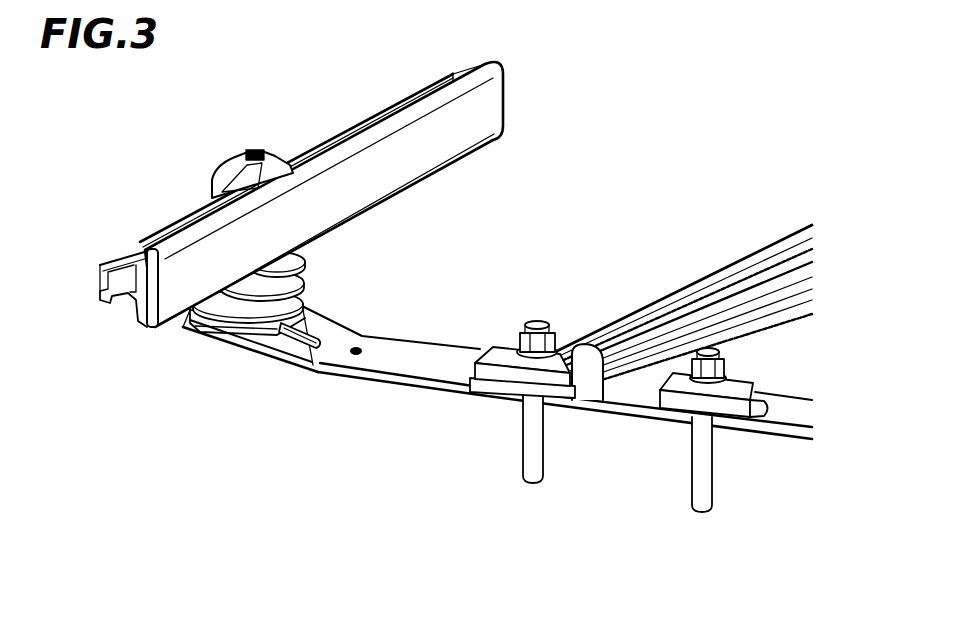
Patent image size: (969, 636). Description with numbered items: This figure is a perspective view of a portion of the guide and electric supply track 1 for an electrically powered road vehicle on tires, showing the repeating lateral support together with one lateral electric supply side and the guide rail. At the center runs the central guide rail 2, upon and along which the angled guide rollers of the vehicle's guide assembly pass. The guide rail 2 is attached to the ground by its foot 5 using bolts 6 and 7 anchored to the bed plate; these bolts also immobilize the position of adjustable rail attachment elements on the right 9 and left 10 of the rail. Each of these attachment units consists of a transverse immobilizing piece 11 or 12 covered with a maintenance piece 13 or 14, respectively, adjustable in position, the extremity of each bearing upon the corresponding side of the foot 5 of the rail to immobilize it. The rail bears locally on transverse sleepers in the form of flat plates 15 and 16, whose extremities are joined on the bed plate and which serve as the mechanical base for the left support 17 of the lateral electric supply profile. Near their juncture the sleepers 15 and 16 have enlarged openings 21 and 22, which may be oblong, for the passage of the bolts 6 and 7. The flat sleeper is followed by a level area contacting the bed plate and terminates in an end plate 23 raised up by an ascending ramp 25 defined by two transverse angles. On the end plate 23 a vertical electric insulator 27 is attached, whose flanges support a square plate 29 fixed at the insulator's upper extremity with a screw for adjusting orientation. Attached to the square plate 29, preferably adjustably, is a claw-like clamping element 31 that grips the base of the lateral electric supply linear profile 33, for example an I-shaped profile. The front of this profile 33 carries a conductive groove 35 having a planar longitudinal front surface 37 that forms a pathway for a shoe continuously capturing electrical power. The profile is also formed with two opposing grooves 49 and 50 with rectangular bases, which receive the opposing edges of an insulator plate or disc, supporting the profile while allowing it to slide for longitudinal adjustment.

The guide and electric supply track 1 is at (653, 110).
The central guide rail 2 is at (753, 262).
The foot 5 is at (584, 402).
The bolt 6 is at (530, 463).
The bolt 7 is at (712, 478).
The rail attachment element 9 is at (479, 320).
The rail attachment element 10 is at (770, 363).
The transverse immobilizing piece 11 is at (476, 362).
The transverse immobilizing piece 12 is at (763, 401).
The maintenance piece 13 is at (507, 346).
The maintenance piece 14 is at (748, 374).
The sleeper plate 15 is at (407, 360).
The sleeper plate 16 is at (788, 418).
The left support 17 is at (280, 132).
The enlarged opening 21 is at (488, 378).
The enlarged opening 22 is at (770, 406).
The end plate 23 is at (230, 336).
The ascending ramp 25 is at (300, 327).
The vertical electric insulator 27 is at (308, 275).
The square plate 29 is at (222, 175).
The clamping element 31 is at (284, 157).
The lateral electric supply linear profile 33 is at (128, 362).
The conductive groove 35 is at (487, 72).
The planar longitudinal front surface 37 is at (495, 107).
The groove 49 is at (140, 327).
The groove 50 is at (145, 240).